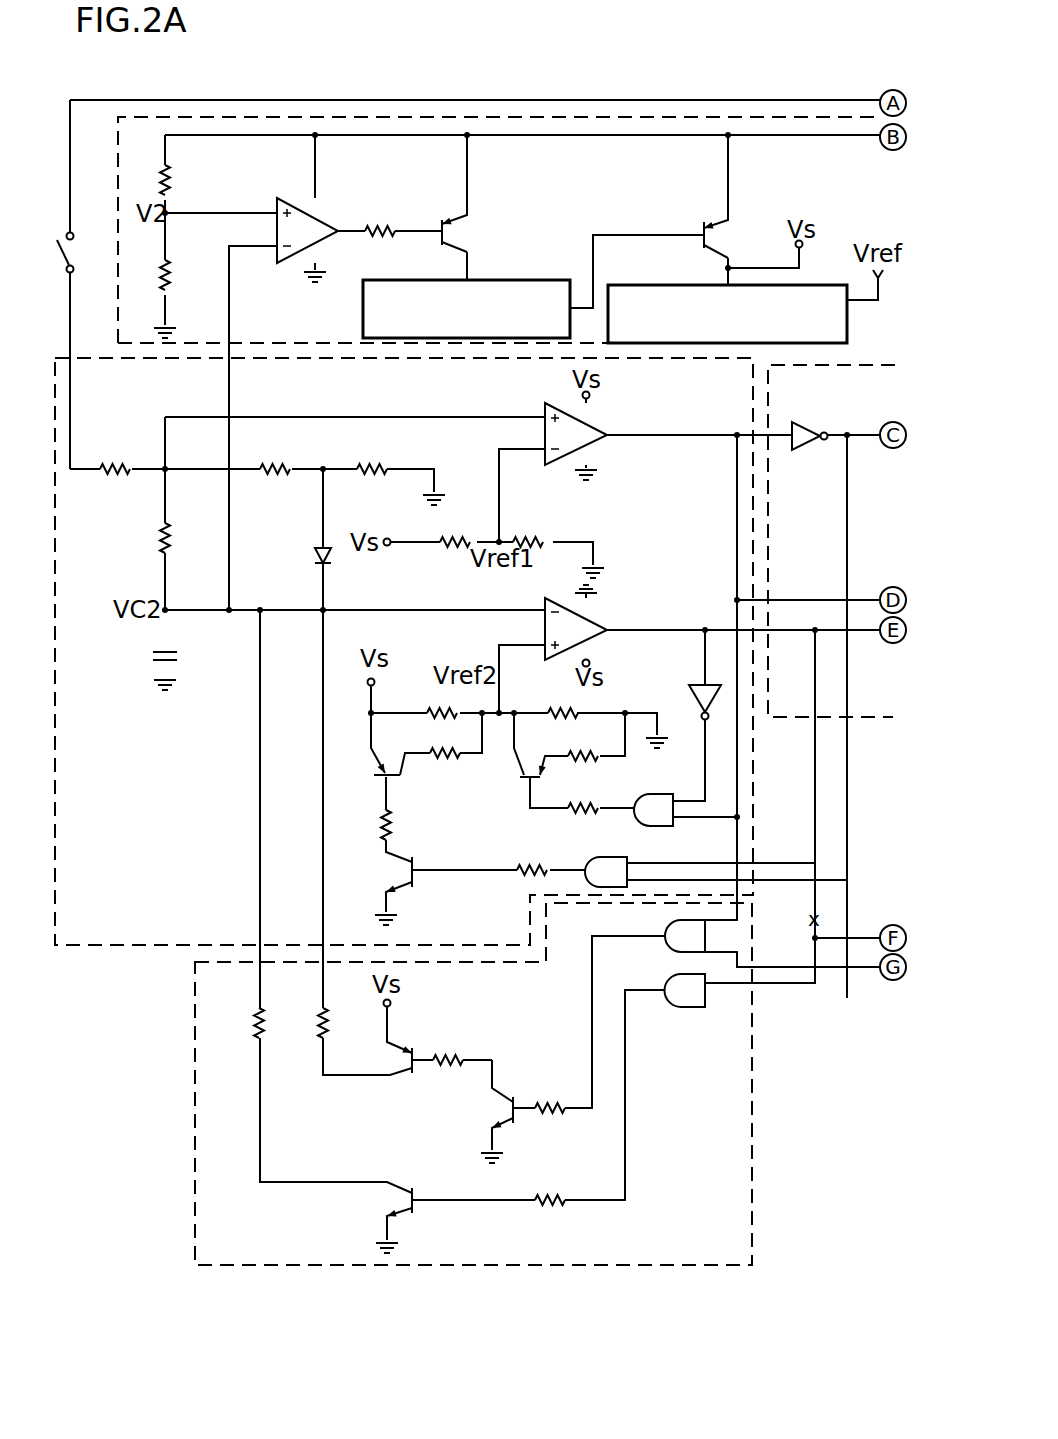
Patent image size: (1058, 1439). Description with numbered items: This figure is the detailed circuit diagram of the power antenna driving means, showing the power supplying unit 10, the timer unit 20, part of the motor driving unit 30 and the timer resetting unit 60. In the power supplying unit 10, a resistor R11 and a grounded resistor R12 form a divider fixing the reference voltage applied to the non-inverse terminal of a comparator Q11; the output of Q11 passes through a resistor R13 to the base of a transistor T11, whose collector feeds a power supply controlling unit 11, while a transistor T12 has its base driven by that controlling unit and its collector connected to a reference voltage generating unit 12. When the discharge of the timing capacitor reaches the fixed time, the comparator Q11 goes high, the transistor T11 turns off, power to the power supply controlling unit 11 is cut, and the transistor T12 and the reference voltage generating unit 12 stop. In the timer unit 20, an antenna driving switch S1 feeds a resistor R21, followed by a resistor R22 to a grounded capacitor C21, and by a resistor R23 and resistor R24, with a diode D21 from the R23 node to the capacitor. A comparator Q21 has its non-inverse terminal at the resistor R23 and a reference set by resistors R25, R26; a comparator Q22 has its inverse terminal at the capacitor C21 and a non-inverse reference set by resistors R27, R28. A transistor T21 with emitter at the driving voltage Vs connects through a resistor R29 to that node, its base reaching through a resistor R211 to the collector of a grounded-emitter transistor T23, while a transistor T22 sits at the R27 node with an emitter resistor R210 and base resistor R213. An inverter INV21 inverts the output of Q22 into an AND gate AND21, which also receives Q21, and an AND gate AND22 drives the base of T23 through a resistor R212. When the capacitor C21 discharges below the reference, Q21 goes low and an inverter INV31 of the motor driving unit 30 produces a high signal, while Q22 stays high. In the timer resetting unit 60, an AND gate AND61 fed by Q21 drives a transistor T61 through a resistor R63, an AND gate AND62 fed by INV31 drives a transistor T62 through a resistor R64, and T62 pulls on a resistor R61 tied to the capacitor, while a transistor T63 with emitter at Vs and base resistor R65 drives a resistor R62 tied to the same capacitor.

The power supplying unit 10 is at (435, 117).
The power supply controlling unit 11 is at (363, 301).
The reference voltage generating unit 12 is at (668, 285).
The timer unit 20 is at (121, 946).
The motor driving unit 30 is at (885, 720).
The timer resetting unit 60 is at (195, 1130).
The antenna driving switch S1 is at (84, 253).
The resistor R11 is at (191, 182).
The resistor R12 is at (191, 277).
The resistor R13 is at (380, 218).
The comparator Q11 is at (294, 198).
The transistor T11 is at (481, 234).
The transistor T12 is at (742, 236).
The resistor R21 is at (116, 455).
The resistor R22 is at (139, 538).
The resistor R23 is at (276, 455).
The resistor R24 is at (368, 455).
The resistor R25 is at (458, 528).
The resistor R26 is at (536, 528).
The resistor R27 is at (441, 699).
The resistor R28 is at (561, 699).
The resistor R29 is at (448, 739).
The resistor R210 is at (584, 742).
The resistor R211 is at (420, 825).
The resistor R212 is at (531, 856).
The resistor R213 is at (584, 794).
The diode D21 is at (301, 557).
The capacitor C21 is at (147, 656).
The comparator Q21 is at (556, 466).
The comparator Q22 is at (600, 625).
The transistor T21 is at (363, 772).
The transistor T22 is at (509, 774).
The transistor T23 is at (375, 874).
The inverter INV21 is at (673, 702).
The inverter INV31 is at (812, 422).
The AND gate AND21 is at (663, 796).
The AND gate AND22 is at (611, 858).
The AND gate AND61 is at (646, 930).
The AND gate AND62 is at (691, 1008).
The resistor R61 is at (235, 1023).
The resistor R62 is at (299, 1023).
The resistor R63 is at (553, 1094).
The resistor R64 is at (553, 1186).
The resistor R65 is at (449, 1046).
The transistor T61 is at (479, 1112).
The transistor T62 is at (376, 1203).
The transistor T63 is at (379, 1058).